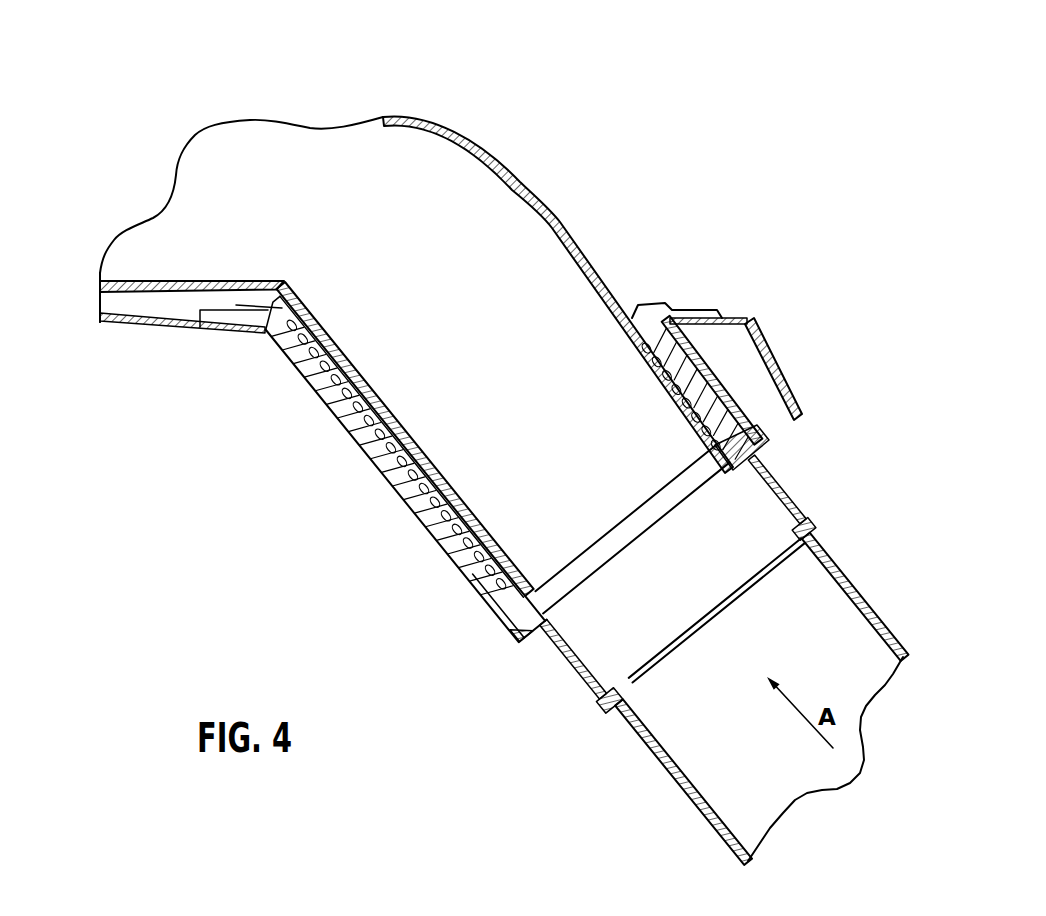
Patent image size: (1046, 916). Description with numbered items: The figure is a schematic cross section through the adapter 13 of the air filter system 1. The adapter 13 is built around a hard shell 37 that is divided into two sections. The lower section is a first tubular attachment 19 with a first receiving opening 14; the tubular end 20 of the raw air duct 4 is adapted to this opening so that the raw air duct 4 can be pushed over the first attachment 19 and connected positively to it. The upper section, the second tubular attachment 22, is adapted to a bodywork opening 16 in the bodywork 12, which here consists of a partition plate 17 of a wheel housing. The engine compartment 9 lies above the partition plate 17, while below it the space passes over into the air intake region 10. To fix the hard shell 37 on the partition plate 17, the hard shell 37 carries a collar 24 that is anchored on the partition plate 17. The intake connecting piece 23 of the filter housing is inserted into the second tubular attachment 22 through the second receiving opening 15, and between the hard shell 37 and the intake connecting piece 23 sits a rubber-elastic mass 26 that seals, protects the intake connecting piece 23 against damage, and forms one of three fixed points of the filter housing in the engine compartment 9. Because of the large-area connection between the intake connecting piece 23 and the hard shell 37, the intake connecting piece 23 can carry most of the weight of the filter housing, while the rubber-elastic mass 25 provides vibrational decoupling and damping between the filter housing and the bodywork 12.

The air filter system 1 is at (724, 114).
The raw air duct 4 is at (639, 727).
The engine compartment 9 is at (769, 191).
The air intake region 10 is at (233, 596).
The bodywork 12 is at (190, 331).
The adapter 13 is at (362, 443).
The first receiving opening 14 is at (668, 564).
The second receiving opening 15 is at (268, 325).
The bodywork opening 16 is at (676, 305).
The partition plate 17 is at (142, 331).
The first attachment 19 is at (598, 692).
The tubular end 20 is at (574, 672).
The second tubular attachment 22 is at (423, 512).
The intake connecting piece 23 is at (343, 353).
The collar 24 is at (243, 331).
The rubber-elastic mass 25 is at (385, 421).
The rubber-elastic mass 26 is at (453, 487).
The hard shell 37 is at (472, 578).